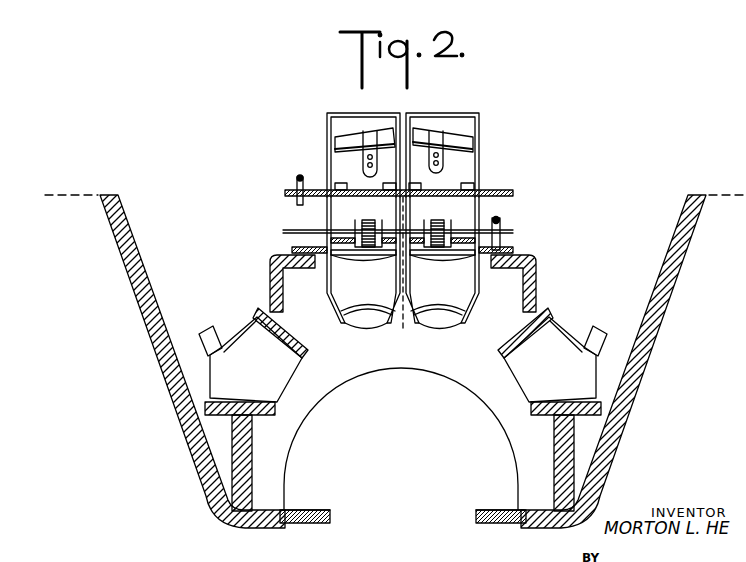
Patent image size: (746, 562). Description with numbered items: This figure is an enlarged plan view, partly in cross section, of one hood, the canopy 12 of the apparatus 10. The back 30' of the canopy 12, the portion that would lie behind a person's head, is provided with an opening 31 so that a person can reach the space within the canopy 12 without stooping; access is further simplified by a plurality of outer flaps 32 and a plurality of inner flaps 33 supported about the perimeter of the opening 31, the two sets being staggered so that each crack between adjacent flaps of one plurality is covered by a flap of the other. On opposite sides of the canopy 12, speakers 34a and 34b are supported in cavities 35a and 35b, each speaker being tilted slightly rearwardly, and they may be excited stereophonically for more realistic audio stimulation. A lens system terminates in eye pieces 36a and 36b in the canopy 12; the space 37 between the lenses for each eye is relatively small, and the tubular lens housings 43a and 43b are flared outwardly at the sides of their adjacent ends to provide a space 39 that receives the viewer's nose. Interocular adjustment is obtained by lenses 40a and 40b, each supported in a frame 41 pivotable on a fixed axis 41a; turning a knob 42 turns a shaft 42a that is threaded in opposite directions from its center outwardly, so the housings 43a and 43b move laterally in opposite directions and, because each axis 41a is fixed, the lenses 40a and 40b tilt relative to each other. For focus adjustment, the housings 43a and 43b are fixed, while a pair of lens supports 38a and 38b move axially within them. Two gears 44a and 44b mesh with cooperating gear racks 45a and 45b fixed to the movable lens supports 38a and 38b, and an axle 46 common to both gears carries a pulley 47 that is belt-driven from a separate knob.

The vessel 10 is at (714, 197).
The canopy 12 is at (168, 450).
The back of the canopy 30' is at (403, 482).
The opening 31 is at (400, 534).
The outer flaps 32 is at (300, 524).
The inner flaps 33 is at (325, 509).
The speaker 34a is at (237, 333).
The speaker 34b is at (568, 333).
The cavity 35a is at (288, 375).
The cavity 35b is at (516, 375).
The eye piece 36a is at (370, 326).
The eye piece 36b is at (437, 326).
The space between the lenses 37 is at (412, 287).
The lens support 38a is at (340, 265).
The lens support 38b is at (414, 263).
The space 39 is at (398, 329).
The lens 40a is at (345, 137).
The lens 40b is at (460, 137).
The frame 41 is at (363, 140).
The fixed axis 41a is at (445, 163).
The knob 42 is at (398, 118).
The shaft 42a is at (310, 192).
The lens housing 43a is at (343, 139).
The lens housing 43b is at (480, 153).
The gear 44a is at (360, 225).
The gear 44b is at (452, 222).
The gear rack 45a is at (380, 252).
The gear rack 45b is at (420, 248).
The axle 46 is at (501, 236).
The pulley 47 is at (513, 251).